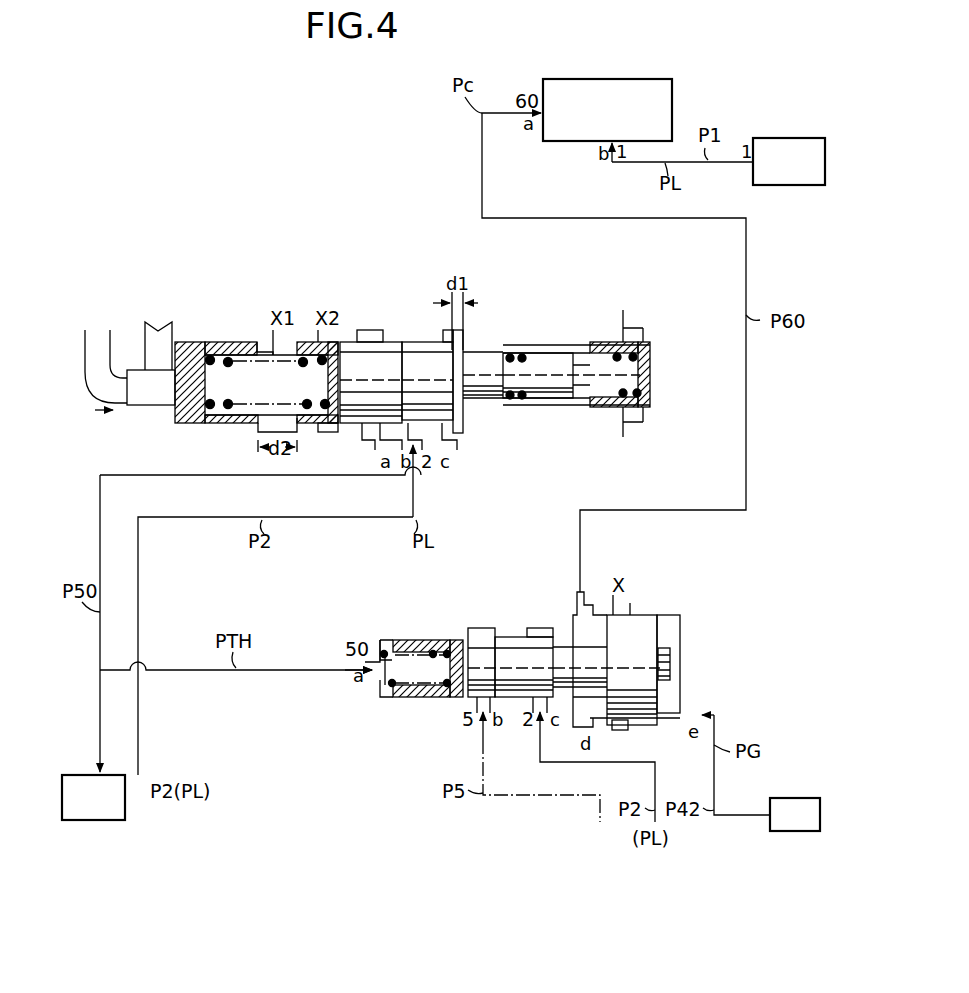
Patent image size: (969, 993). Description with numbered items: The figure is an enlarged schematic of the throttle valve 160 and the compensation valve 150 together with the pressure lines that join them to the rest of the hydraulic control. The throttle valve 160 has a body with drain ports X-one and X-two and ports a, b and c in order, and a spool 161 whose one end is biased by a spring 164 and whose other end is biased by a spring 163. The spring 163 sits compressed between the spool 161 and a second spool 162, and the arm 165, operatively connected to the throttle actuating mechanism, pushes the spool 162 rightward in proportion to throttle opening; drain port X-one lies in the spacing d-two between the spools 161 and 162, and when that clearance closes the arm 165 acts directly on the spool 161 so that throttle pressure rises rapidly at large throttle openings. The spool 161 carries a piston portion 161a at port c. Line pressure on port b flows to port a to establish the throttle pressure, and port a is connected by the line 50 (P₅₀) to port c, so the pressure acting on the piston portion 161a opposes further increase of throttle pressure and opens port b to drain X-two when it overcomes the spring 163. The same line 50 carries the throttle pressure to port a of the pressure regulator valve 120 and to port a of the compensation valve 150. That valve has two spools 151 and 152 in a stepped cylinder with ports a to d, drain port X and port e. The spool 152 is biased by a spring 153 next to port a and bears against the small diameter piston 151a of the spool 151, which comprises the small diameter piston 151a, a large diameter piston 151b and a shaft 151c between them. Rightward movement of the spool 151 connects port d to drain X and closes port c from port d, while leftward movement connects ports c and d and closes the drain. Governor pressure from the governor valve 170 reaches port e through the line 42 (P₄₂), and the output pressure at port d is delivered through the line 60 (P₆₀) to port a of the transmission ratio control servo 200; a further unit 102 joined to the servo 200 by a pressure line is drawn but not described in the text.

The transmission ratio control servo 200 is at (607, 110).
The pressure source 102 is at (789, 161).
The arm 165 is at (92, 340).
The spool 162 is at (185, 342).
The spring 163 is at (226, 355).
The spool 161 is at (372, 352).
The piston portion 161a is at (440, 345).
The throttle valve 160 is at (505, 338).
The spring 164 is at (530, 352).
The line P₅₀ 50 is at (376, 445).
The pressure regulator valve 120 is at (93, 797).
The spring 153 is at (393, 690).
The compensation valve 150 is at (372, 690).
The spool 152 is at (462, 640).
The small diameter piston 151a is at (503, 642).
The shaft 151c is at (565, 650).
The line P₆₀ 60 is at (616, 639).
The large diameter piston 151b is at (640, 615).
The spool 151 is at (593, 697).
The line P₄₂ 42 is at (702, 701).
The governor valve 170 is at (795, 814).